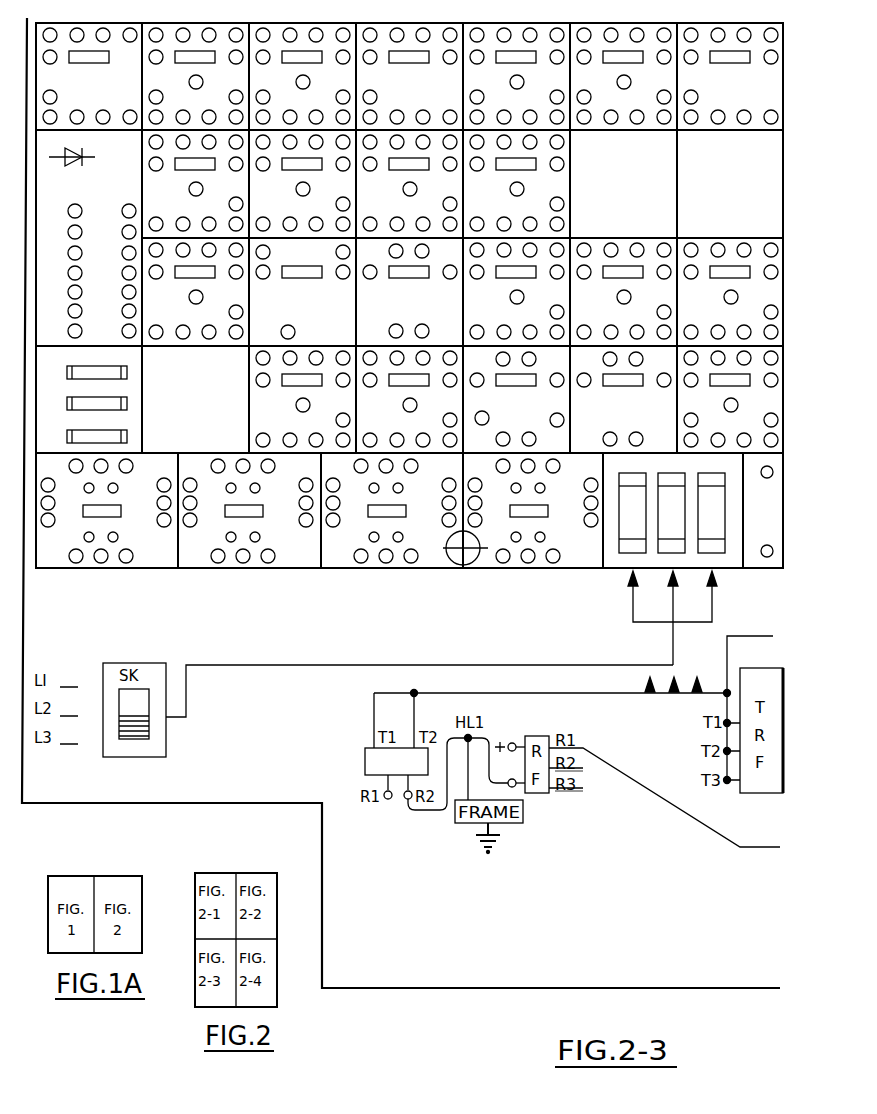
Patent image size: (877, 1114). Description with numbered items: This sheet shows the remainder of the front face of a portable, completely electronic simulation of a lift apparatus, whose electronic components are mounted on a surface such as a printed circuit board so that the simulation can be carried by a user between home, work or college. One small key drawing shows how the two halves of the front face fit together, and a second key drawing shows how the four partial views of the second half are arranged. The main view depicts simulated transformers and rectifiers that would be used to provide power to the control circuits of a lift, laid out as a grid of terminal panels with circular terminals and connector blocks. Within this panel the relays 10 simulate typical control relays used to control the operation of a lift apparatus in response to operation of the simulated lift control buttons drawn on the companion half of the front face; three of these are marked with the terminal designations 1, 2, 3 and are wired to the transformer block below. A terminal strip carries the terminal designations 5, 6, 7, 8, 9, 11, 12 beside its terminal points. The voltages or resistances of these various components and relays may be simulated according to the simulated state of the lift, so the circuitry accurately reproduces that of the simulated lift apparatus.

The relays 10 is at (115, 52).
The transformer TRS 9 is at (365, 751).
The relay 1 is at (632, 513).
The relay 2 is at (671, 513).
The relay 3 is at (711, 513).
The terminal 5 is at (68, 332).
The terminal 6 is at (122, 332).
The terminal 7 is at (68, 312).
The terminal 8 is at (122, 312).
The terminal 11 is at (63, 274).
The terminal 12 is at (117, 274).